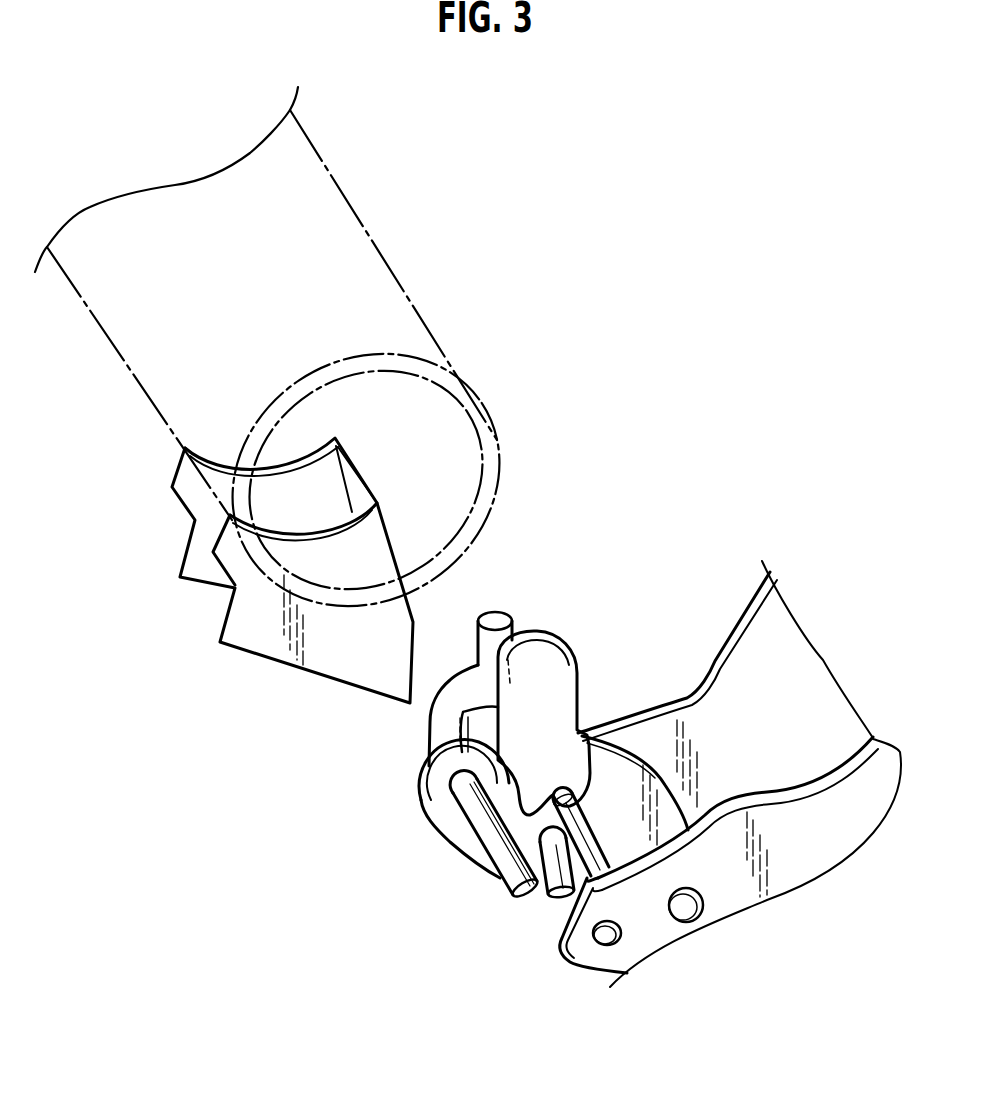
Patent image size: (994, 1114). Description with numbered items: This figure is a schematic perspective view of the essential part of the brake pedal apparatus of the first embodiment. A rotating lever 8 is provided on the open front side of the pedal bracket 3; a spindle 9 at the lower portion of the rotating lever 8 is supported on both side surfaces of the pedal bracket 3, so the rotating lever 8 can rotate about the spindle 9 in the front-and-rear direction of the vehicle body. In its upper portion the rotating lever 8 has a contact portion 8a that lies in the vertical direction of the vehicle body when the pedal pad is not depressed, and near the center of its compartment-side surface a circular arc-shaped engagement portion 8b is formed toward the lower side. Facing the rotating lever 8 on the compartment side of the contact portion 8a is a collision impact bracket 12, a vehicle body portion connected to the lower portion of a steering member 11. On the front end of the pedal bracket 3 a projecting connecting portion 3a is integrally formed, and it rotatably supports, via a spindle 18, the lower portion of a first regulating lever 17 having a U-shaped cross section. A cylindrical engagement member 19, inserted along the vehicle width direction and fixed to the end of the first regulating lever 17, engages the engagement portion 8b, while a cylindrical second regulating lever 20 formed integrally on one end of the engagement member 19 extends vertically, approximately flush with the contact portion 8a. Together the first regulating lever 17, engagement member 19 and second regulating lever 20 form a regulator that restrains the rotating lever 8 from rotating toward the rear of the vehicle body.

The pedal bracket 3 is at (687, 698).
The connecting portion 3a is at (577, 953).
The rotating lever 8 is at (560, 657).
The contact portion 8a is at (490, 659).
The engagement portion 8b is at (586, 793).
The spindle 9 is at (687, 907).
The steering member 11 is at (398, 263).
The collision impact bracket 12 is at (412, 682).
The first regulating lever 17 is at (422, 803).
The spindle 18 is at (557, 893).
The engagement member 19 is at (478, 822).
The second regulating lever 20 is at (493, 617).